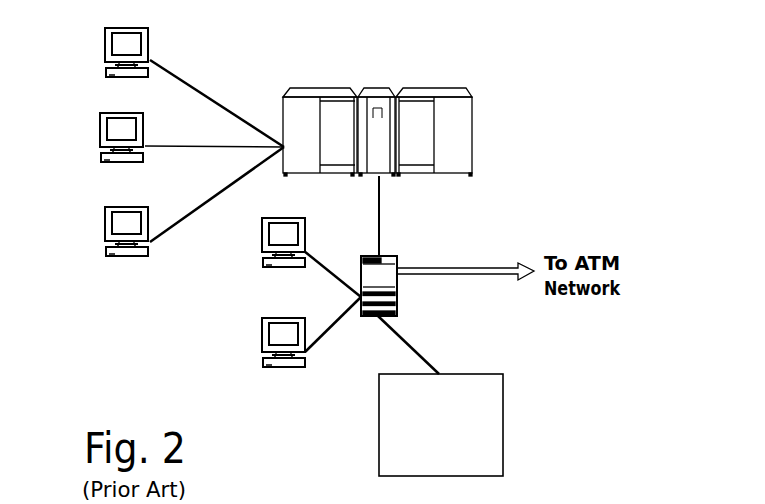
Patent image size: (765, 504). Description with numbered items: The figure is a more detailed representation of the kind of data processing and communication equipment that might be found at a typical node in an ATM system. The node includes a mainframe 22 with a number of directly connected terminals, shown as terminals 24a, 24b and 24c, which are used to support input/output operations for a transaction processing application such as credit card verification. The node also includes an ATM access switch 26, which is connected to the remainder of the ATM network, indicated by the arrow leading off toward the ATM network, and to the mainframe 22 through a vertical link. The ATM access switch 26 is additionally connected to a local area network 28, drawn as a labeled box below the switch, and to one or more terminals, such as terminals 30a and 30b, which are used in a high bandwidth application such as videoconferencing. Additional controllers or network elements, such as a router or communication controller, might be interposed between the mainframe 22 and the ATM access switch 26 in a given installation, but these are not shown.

The mainframe 22 is at (382, 88).
The terminal 24a is at (105, 47).
The terminal 24b is at (100, 130).
The terminal 24c is at (105, 225).
The ATM access switch 26 is at (396, 256).
The local area network 28 is at (503, 425).
The terminal 30a is at (261, 243).
The terminal 30b is at (261, 343).